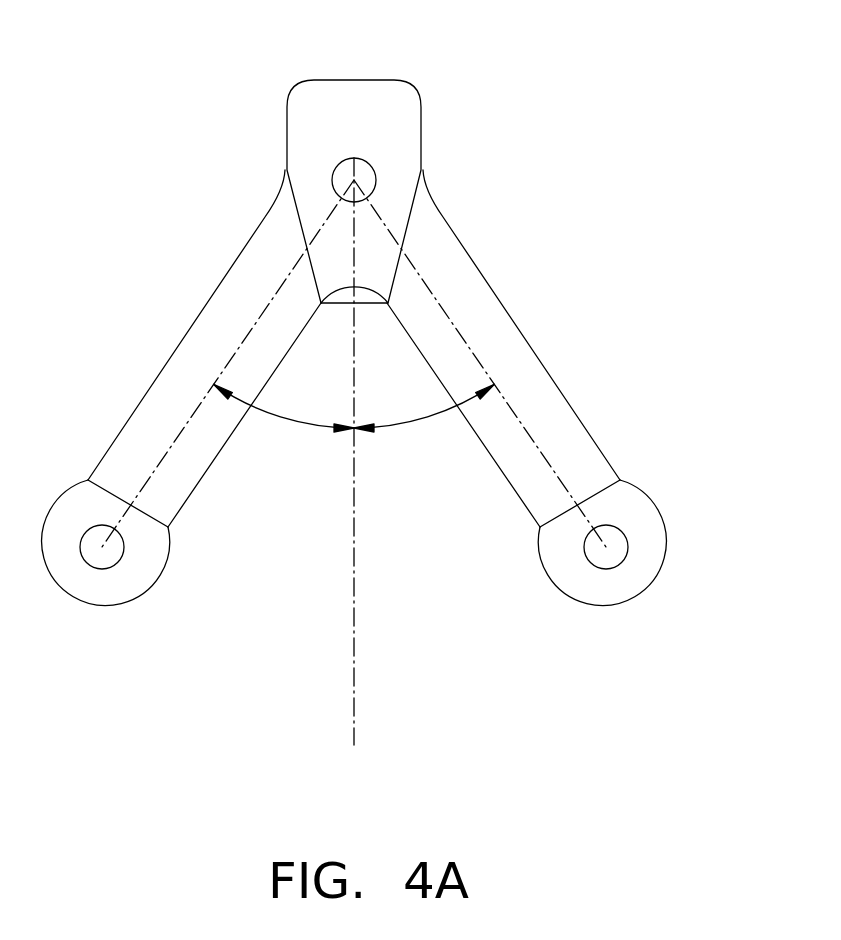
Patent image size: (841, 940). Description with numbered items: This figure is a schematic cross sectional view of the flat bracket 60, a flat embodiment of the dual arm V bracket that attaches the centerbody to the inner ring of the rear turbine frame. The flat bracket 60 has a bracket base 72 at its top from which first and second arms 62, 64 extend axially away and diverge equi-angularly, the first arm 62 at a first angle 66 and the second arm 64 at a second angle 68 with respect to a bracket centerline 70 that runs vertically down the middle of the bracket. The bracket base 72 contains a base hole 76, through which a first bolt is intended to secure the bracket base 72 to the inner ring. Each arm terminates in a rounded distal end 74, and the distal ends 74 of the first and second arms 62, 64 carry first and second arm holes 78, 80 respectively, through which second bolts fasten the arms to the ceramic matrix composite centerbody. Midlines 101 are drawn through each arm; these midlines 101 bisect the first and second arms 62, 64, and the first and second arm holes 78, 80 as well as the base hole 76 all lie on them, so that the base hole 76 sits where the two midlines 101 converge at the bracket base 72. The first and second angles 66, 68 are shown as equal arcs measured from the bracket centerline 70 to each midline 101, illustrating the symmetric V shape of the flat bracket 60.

The flat bracket 60 is at (372, 332).
The first arm 62 is at (202, 477).
The second arm 64 is at (586, 427).
The first angle 66 is at (300, 422).
The second angle 68 is at (407, 422).
The bracket centerline 70 is at (357, 718).
The bracket base 72 is at (423, 120).
The distal ends 74 is at (168, 527).
The base hole 76 is at (340, 197).
The first arm hole 78 is at (124, 548).
The second arm hole 80 is at (590, 563).
The midlines 101 is at (248, 333).